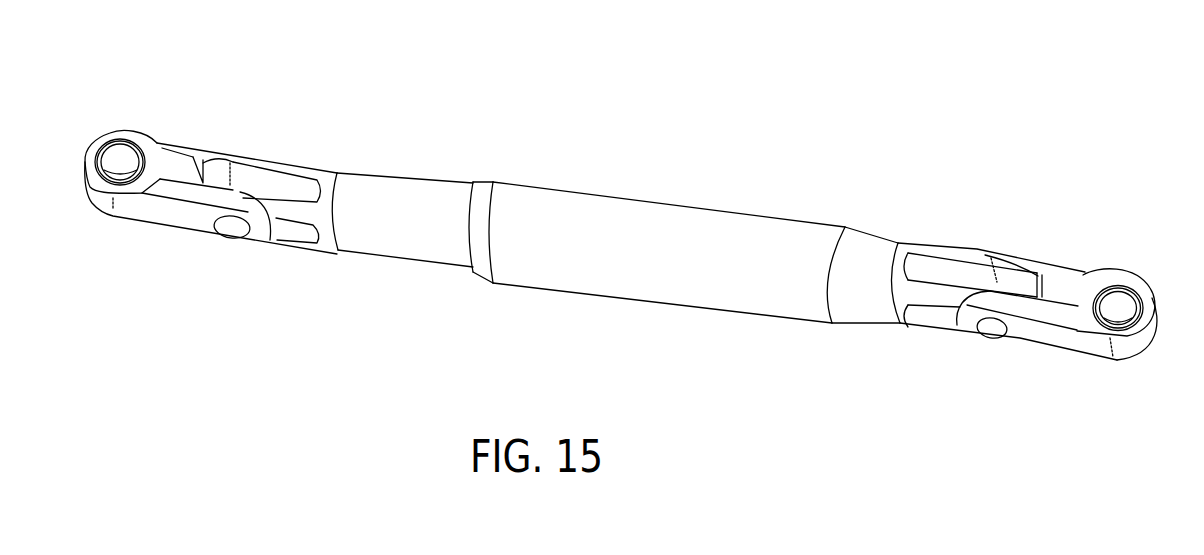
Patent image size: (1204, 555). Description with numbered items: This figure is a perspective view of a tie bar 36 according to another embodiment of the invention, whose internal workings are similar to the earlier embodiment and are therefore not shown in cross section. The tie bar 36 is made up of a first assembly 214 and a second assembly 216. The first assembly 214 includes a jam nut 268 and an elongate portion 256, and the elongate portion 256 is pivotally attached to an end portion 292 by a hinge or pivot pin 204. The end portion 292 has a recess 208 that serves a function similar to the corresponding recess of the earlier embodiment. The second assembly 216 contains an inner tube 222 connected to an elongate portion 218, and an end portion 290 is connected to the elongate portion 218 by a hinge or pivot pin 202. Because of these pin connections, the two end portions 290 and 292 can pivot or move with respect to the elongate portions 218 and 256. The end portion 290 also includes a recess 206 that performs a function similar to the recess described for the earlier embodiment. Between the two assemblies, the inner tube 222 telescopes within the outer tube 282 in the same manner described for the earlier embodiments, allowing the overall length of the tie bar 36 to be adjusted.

The tie rod assembly 36 is at (613, 240).
The hinge or pivot pin 202 is at (237, 232).
The hinge or pivot pin 204 is at (992, 334).
The recess 206 is at (121, 152).
The recess 208 is at (1123, 303).
The first assembly 214 is at (964, 307).
The second assembly 216 is at (196, 202).
The elongate portion 218 is at (308, 166).
The inner tube 222 is at (392, 173).
The elongate portion 256 is at (945, 248).
The jam nut 268 is at (867, 230).
The outer tube 282 is at (743, 200).
The end portion 290 is at (182, 157).
The end portion 292 is at (1138, 328).